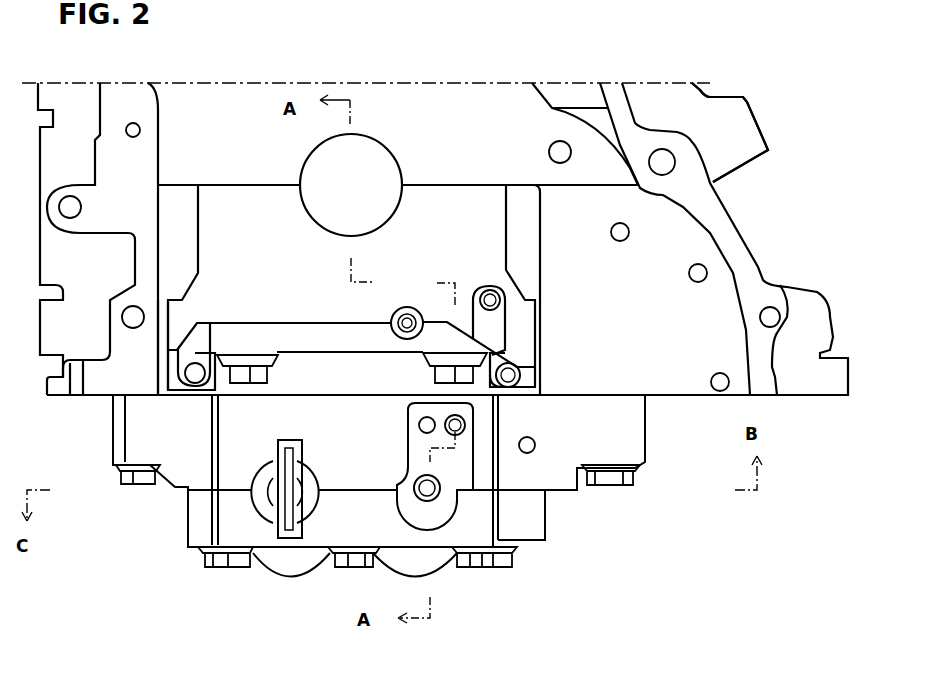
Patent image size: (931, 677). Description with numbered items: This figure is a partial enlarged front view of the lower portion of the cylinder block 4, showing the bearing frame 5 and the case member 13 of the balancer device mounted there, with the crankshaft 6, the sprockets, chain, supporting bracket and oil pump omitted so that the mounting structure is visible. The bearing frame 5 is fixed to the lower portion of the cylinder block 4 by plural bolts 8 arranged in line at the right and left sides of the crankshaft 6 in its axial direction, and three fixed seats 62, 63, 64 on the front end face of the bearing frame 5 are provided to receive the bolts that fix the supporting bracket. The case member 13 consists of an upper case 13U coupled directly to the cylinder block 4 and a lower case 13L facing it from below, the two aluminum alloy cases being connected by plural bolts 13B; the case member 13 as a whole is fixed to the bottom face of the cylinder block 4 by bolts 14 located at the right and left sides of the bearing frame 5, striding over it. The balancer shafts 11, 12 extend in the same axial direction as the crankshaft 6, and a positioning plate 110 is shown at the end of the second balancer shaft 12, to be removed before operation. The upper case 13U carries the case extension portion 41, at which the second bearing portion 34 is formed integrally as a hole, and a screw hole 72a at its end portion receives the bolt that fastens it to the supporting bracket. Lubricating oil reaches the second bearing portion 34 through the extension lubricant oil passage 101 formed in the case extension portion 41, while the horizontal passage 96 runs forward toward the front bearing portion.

The cylinder block 4 is at (720, 135).
The bearing frame 5 is at (178, 325).
The crankshaft 6 is at (368, 173).
The bolts 8 is at (437, 372).
The balancer shaft 11 is at (430, 503).
The second balancer shaft 12 is at (275, 492).
The case member 13 is at (652, 537).
The upper case 13U is at (557, 475).
The lower case 13L is at (525, 528).
The bolts 13B is at (490, 567).
The bolts 14 is at (677, 502).
The second bearing portion 34 is at (405, 498).
The case extension portion 41 is at (410, 448).
The fixed seat 62 is at (391, 318).
The fixed seat 63 is at (482, 287).
The fixed seat 64 is at (513, 365).
The screw hole 72a is at (465, 422).
The horizontal passage 96 is at (538, 445).
The extension lubricant oil passage 101 is at (405, 421).
The positioning plate 110 is at (290, 460).